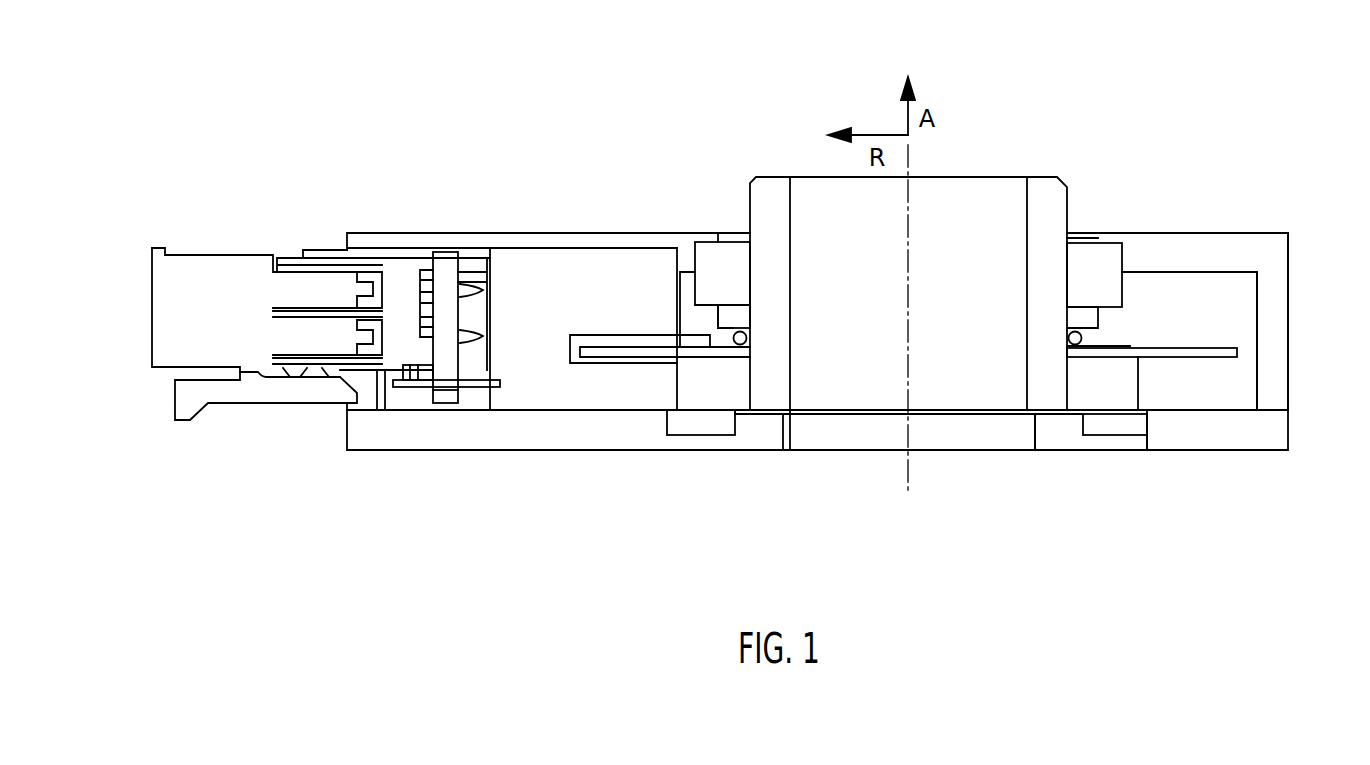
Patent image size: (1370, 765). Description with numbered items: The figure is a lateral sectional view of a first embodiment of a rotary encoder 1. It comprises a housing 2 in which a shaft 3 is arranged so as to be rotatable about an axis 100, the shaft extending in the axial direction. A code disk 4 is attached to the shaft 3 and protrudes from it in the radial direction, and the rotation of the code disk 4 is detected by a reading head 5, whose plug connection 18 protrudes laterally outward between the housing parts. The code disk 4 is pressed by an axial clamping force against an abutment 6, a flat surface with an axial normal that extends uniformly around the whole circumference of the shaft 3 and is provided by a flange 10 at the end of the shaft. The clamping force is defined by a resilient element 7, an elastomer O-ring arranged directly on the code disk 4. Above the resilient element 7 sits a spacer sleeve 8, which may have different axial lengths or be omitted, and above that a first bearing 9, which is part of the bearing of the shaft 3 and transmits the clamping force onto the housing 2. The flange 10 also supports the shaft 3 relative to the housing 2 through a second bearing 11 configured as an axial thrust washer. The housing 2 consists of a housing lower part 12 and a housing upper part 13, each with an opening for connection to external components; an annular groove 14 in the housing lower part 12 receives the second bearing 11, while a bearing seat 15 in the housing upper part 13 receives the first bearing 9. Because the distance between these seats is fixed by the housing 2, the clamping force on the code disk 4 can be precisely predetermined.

The rotary encoder 1 is at (1150, 72).
The housing 2 is at (1306, 428).
The shaft 3 is at (1046, 185).
The code disk 4 is at (630, 350).
The reading head 5 is at (545, 262).
The abutment 6 is at (710, 343).
The resilient element 7 is at (748, 338).
The spacer sleeve 8 is at (735, 312).
The first bearing 9 is at (704, 253).
The flange 10 is at (728, 398).
The second bearing 11 is at (682, 427).
The housing lower part 12 is at (1057, 440).
The housing upper part 13 is at (1175, 252).
The annular groove 14 is at (1143, 438).
The bearing seat 15 is at (1090, 250).
The plug connection 18 is at (215, 260).
The axis 100 is at (932, 324).